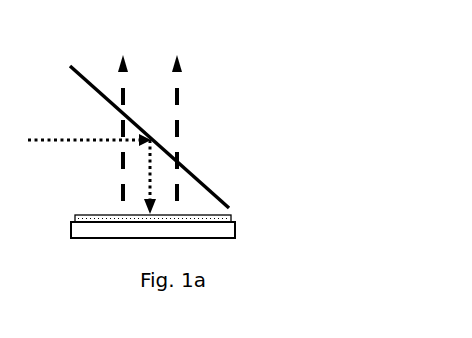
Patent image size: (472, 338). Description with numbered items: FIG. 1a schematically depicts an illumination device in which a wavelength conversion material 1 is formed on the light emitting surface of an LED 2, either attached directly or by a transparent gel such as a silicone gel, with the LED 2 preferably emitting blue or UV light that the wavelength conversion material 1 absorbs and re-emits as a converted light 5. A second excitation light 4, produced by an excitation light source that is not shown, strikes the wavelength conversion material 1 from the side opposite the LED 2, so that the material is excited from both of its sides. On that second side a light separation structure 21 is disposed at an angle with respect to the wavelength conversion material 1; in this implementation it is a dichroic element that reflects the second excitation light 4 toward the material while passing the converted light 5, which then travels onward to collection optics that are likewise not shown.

The wavelength conversion material 1 is at (217, 191).
The LED 2 is at (214, 218).
The second excitation light 4 is at (250, 141).
The converted light 5 is at (237, 116).
The light separation structure 21 is at (223, 137).